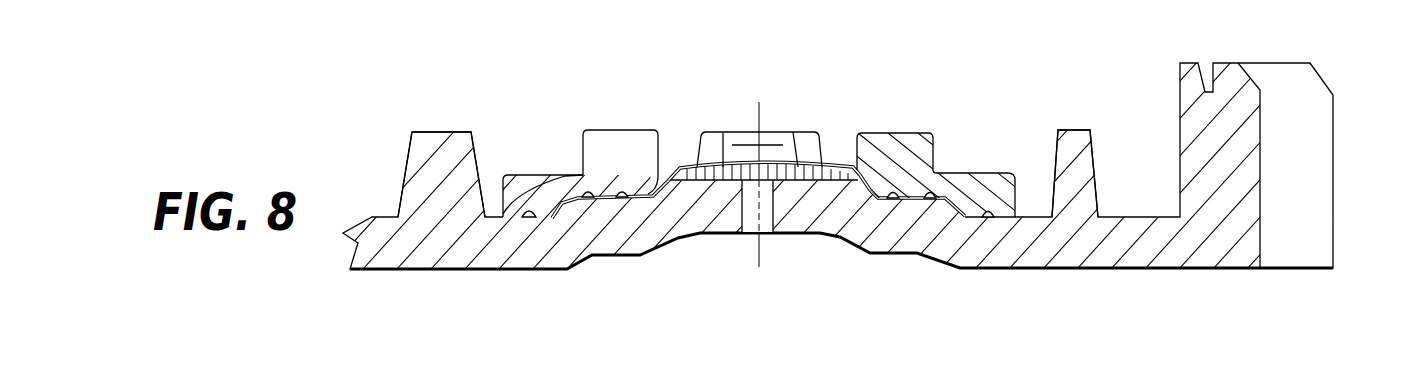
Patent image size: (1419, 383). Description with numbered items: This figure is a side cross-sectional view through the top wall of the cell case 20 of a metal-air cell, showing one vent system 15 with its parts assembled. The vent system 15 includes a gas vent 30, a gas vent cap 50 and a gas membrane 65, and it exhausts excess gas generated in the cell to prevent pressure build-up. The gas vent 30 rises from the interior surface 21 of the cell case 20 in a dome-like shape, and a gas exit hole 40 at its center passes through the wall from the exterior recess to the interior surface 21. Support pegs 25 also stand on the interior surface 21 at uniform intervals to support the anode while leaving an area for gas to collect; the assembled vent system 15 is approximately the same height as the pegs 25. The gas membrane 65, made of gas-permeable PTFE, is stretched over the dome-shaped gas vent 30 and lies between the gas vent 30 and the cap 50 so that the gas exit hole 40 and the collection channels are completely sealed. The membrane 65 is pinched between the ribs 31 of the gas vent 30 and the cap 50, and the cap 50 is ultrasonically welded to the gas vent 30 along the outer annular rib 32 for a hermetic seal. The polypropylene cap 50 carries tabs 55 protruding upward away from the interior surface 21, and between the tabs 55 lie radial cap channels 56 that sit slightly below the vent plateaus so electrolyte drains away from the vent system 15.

The vent system 15 is at (622, 128).
The cell case 20 is at (1334, 241).
The interior surface 21 is at (1140, 215).
The support posts or pegs 25 is at (434, 152).
The gas vent 30 is at (684, 175).
The ribs 31 is at (622, 199).
The outer annular rib 32 is at (529, 212).
The gas exit hole 40 is at (766, 230).
The gas vent cap 50 is at (983, 175).
The tabs 55 is at (920, 147).
The radial cap channels 56 is at (550, 198).
The gas membrane 65 is at (831, 165).